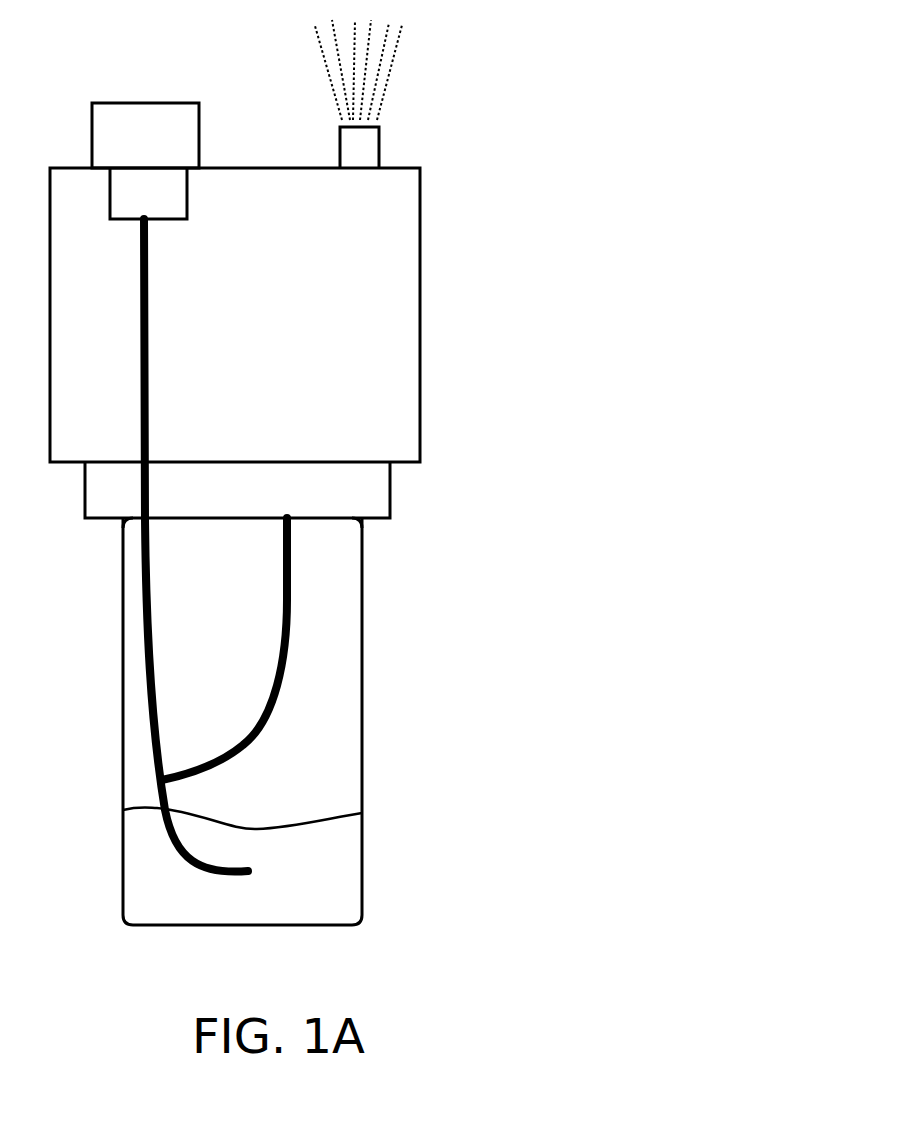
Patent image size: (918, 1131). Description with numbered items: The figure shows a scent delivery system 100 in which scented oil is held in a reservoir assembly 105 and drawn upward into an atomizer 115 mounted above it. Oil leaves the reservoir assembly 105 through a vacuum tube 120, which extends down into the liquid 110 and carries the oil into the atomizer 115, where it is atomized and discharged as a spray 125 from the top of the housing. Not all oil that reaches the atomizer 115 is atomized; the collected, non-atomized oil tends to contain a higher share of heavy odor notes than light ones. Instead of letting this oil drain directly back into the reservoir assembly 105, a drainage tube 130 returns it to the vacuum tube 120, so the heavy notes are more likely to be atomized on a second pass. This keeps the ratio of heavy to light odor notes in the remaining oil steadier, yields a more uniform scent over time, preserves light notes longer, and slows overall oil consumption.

The scent delivery system 100 is at (288, 101).
The reservoir assembly 105 is at (317, 770).
The liquid 110 is at (323, 895).
The atomizer 115 is at (393, 270).
The vacuum tube 120 is at (148, 707).
The spray nozzle 125 is at (385, 82).
The drainage tube 130 is at (285, 655).